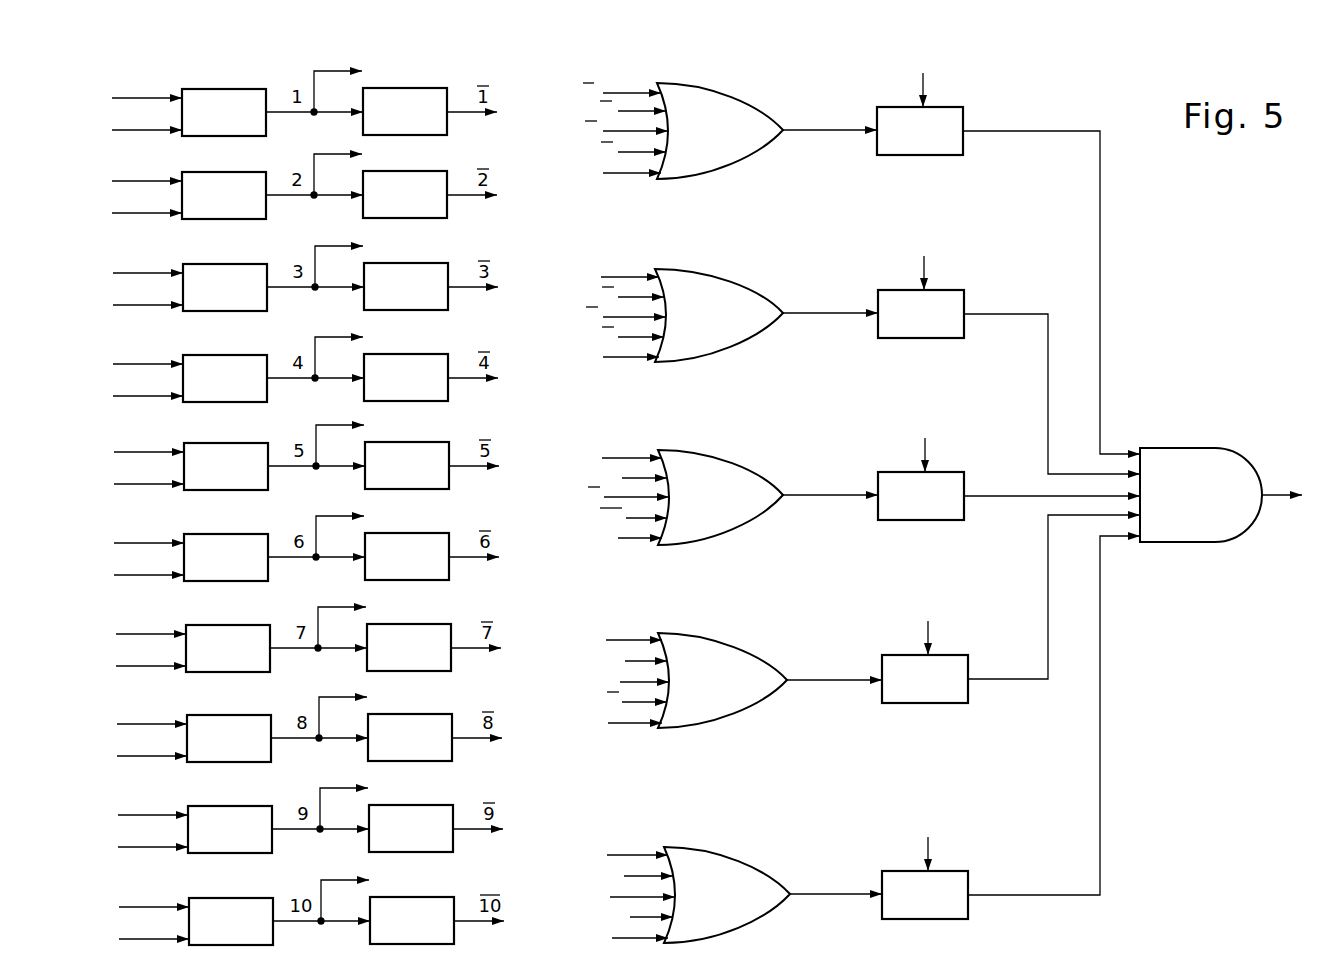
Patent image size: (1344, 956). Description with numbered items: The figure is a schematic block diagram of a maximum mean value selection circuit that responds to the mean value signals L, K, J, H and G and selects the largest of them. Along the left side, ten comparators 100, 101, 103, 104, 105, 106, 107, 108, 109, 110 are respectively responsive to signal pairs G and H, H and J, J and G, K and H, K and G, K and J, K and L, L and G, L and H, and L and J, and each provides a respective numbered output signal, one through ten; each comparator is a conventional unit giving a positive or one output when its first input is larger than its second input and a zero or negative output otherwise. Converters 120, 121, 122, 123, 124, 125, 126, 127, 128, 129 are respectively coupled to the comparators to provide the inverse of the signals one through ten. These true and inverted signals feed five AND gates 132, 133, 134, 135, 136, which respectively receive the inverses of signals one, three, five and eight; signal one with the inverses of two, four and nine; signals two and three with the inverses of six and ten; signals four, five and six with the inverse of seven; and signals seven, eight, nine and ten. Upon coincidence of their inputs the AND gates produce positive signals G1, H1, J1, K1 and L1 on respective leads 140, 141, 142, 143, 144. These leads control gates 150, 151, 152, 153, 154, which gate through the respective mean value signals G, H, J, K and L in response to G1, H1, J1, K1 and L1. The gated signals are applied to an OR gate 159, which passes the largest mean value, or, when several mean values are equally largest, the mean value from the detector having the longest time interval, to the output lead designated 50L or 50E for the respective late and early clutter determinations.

The comparator 100 is at (179, 101).
The comparator 101 is at (179, 184).
The comparator 103 is at (180, 276).
The comparator 104 is at (180, 367).
The comparator 105 is at (181, 455).
The comparator 106 is at (181, 546).
The comparator 107 is at (183, 637).
The comparator 108 is at (184, 727).
The comparator 109 is at (185, 818).
The comparator 110 is at (186, 910).
The converter 120 is at (430, 98).
The converter 121 is at (430, 181).
The converter 122 is at (431, 273).
The converter 123 is at (431, 364).
The converter 124 is at (432, 452).
The converter 125 is at (432, 543).
The converter 126 is at (434, 634).
The converter 127 is at (435, 724).
The converter 128 is at (436, 815).
The converter 129 is at (437, 907).
The AND gate 132 is at (698, 90).
The AND gate 133 is at (701, 277).
The AND gate 134 is at (703, 460).
The AND gate 135 is at (705, 640).
The AND gate 136 is at (707, 854).
The lead 140 is at (811, 129).
The lead 141 is at (812, 313).
The lead 142 is at (813, 495).
The lead 143 is at (816, 680).
The lead 144 is at (818, 893).
The gate 150 is at (931, 112).
The gate 151 is at (932, 295).
The gate 152 is at (934, 477).
The gate 153 is at (938, 660).
The gate 154 is at (938, 876).
The OR gate 159 is at (1165, 452).
The maximum mean value of the late samples 50L is at (1291, 516).
The maximum mean value of the early samples 50E is at (1273, 495).